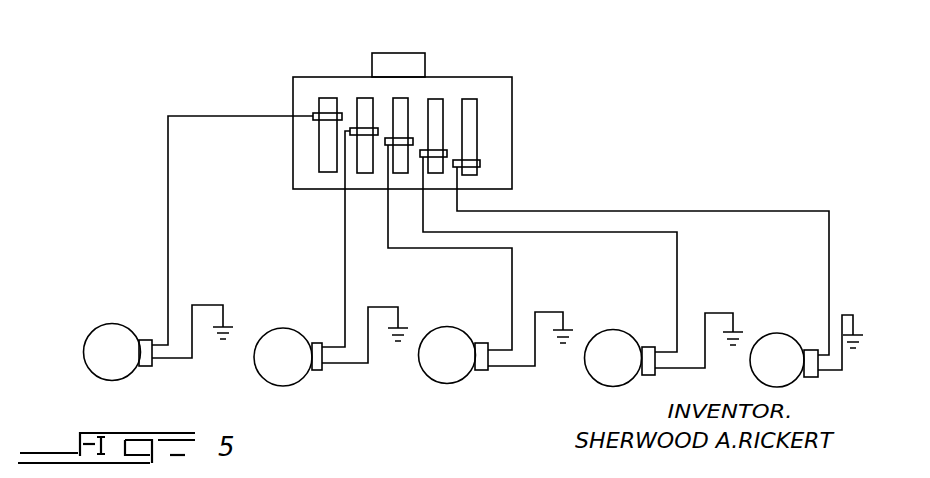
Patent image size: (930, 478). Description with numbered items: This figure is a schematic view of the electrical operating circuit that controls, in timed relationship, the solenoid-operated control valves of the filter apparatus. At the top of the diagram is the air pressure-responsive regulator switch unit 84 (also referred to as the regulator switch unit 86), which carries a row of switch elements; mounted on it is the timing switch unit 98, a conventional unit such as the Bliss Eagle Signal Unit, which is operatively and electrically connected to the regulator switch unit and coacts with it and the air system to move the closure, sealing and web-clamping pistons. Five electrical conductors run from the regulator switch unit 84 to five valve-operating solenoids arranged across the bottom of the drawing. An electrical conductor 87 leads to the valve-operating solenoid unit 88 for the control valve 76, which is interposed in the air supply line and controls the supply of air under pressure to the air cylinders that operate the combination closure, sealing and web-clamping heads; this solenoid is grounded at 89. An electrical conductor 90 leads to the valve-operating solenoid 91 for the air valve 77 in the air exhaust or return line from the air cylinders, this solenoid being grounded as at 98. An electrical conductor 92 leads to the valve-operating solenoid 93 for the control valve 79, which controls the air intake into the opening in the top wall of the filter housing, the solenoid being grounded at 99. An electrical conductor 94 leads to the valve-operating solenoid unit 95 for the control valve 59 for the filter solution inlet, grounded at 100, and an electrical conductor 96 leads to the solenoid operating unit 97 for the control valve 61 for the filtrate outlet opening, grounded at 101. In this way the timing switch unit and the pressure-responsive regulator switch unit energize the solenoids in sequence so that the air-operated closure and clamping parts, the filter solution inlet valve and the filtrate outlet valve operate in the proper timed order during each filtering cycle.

The air pressure-responsive regulator switch unit 84 is at (514, 128).
The air pressure-responsive regulator switch unit 86 is at (500, 77).
The timing switch unit 98 is at (405, 53).
The electrical conductor 87 is at (215, 113).
The valve-operating solenoid unit 88 is at (147, 338).
The solenoid-operated control valve 76 is at (113, 368).
The ground 89 is at (180, 362).
The electrical conductor 90 is at (343, 232).
The solenoid-operated control valve 77 is at (287, 373).
The valve-operating solenoid 91 is at (317, 367).
The electrical conductor 92 is at (513, 273).
The solenoid-operated control valve 79 is at (452, 373).
The valve-operating solenoid 93 is at (483, 373).
The ground 99 is at (527, 308).
The electrical conductor 94 is at (683, 275).
The control valve 59 is at (605, 377).
The valve-operating solenoid unit 95 is at (647, 345).
The ground 100 is at (680, 370).
The electrical conductor 96 is at (785, 212).
The control valve 61 is at (783, 338).
The solenoid operating unit 97 is at (795, 368).
The ground 101 is at (847, 313).